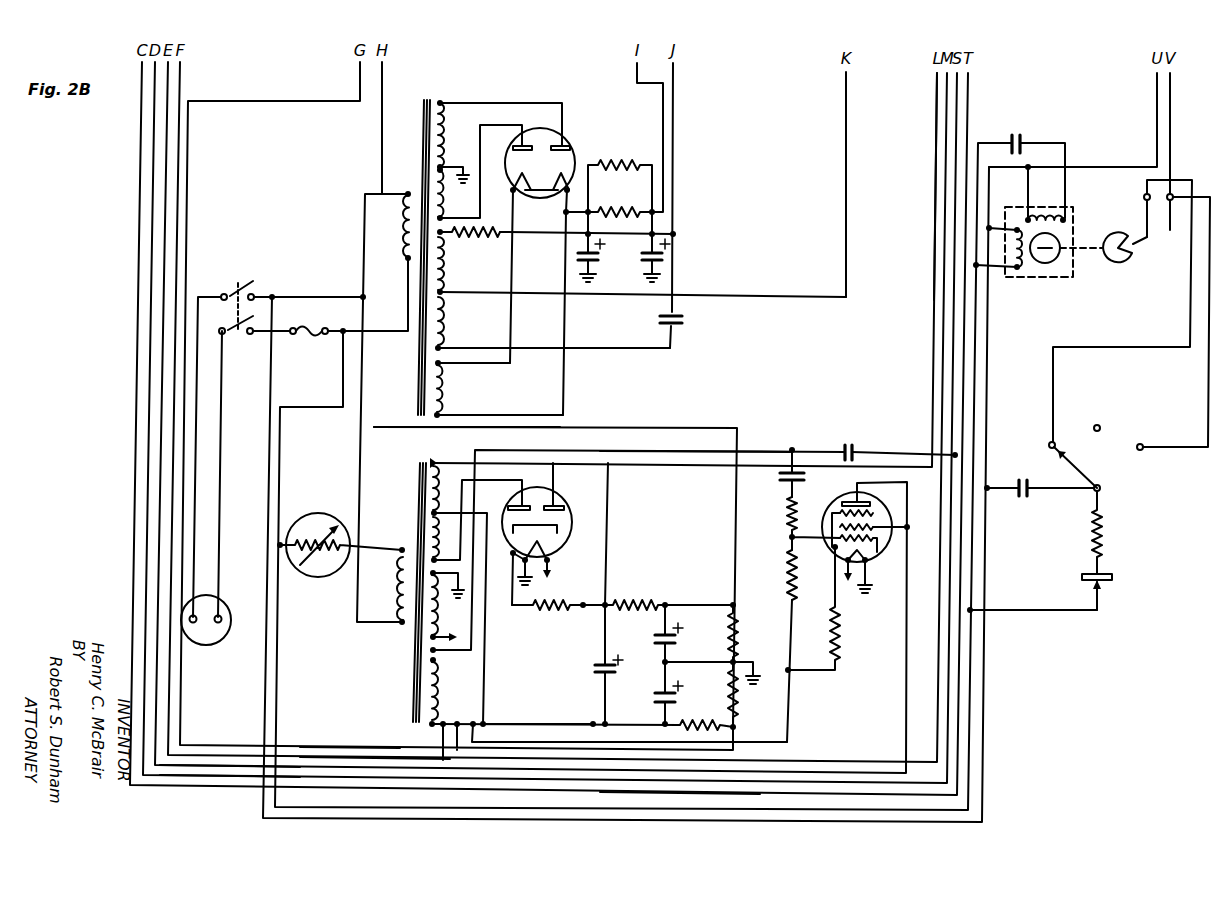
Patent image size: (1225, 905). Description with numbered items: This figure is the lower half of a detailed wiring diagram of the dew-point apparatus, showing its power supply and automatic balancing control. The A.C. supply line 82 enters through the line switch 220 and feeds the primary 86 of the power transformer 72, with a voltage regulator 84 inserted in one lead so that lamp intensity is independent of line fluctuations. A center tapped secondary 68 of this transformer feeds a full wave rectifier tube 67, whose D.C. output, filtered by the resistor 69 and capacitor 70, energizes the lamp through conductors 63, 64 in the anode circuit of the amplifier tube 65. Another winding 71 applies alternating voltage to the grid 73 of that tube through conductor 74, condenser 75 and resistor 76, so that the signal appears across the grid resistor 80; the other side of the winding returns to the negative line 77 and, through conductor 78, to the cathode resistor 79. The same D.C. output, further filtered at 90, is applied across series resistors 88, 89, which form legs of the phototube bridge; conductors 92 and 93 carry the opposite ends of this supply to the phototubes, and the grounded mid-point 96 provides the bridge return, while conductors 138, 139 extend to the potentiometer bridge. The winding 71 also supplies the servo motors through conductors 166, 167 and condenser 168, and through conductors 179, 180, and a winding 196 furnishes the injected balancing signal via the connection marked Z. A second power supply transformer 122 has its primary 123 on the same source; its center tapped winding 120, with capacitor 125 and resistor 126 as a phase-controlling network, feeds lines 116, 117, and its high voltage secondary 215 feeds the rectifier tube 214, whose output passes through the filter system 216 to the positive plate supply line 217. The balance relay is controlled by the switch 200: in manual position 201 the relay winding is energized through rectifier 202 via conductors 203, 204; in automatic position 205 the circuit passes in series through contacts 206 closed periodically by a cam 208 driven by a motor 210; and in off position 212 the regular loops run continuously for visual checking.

The conductor 63 is at (188, 765).
The conductor 64 is at (202, 777).
The amplifier tube 65 is at (878, 512).
The full wave rectifier tube 67 is at (556, 508).
The center tapped secondary 68 is at (425, 490).
The resistor 69 is at (560, 612).
The capacitor 70 is at (592, 668).
The winding 71 is at (438, 690).
The power transformer 72 is at (412, 654).
The grid 73 is at (880, 552).
The conductor 74 is at (699, 460).
The condenser 75 is at (783, 482).
The resistor 76 is at (787, 512).
The negative line 77 is at (556, 700).
The conductor 78 is at (790, 712).
The cathode resistor 79 is at (842, 648).
The grid resistor 80 is at (787, 578).
The supply line 82 is at (205, 633).
The voltage regulator 84 is at (309, 577).
The primary 86 is at (395, 595).
The resistor 88 is at (740, 637).
The resistor 89 is at (741, 702).
The filter 90 is at (681, 602).
The conductor 92 is at (686, 418).
The conductor 93 is at (325, 725).
The grounded mid-point 96 is at (753, 665).
The line 116 is at (676, 117).
The line 117 is at (845, 183).
The center tapped winding 120 is at (448, 283).
The power supply transformer 122 is at (420, 124).
The primary 123 is at (405, 255).
The capacitor 125 is at (686, 320).
The resistor 126 is at (453, 237).
The conductor 138 is at (932, 355).
The conductor 139 is at (966, 372).
The conductor 166 is at (940, 332).
The conductor 167 is at (955, 401).
The condenser 168 is at (853, 450).
The conductor 179 is at (688, 795).
The conductor 180 is at (413, 768).
The winding 196 is at (445, 612).
The switch 200 is at (1075, 490).
The manual position 201 is at (1145, 452).
The rectifier 202 is at (1110, 582).
The conductor 203 is at (968, 737).
The conductor 204 is at (982, 773).
The automatic position 205 is at (1048, 448).
The contacts 206 is at (1160, 235).
The cam 208 is at (1117, 258).
The motor 210 is at (1030, 278).
The off position 212 is at (1095, 431).
The full wave rectifier tube 214 is at (572, 140).
The high voltage secondary 215 is at (447, 143).
The filter system 216 is at (617, 243).
The positive plate supply line 217 is at (660, 92).
The line switch 220 is at (232, 292).